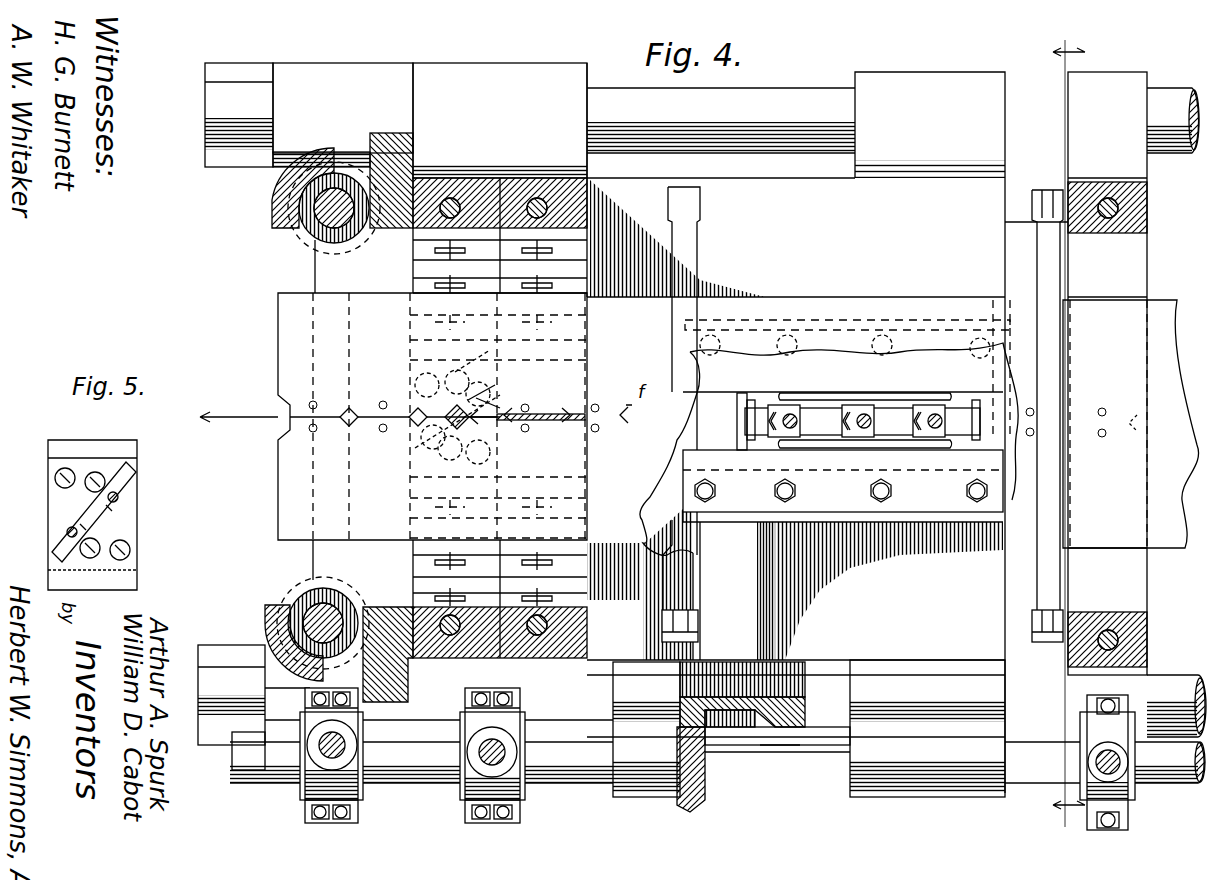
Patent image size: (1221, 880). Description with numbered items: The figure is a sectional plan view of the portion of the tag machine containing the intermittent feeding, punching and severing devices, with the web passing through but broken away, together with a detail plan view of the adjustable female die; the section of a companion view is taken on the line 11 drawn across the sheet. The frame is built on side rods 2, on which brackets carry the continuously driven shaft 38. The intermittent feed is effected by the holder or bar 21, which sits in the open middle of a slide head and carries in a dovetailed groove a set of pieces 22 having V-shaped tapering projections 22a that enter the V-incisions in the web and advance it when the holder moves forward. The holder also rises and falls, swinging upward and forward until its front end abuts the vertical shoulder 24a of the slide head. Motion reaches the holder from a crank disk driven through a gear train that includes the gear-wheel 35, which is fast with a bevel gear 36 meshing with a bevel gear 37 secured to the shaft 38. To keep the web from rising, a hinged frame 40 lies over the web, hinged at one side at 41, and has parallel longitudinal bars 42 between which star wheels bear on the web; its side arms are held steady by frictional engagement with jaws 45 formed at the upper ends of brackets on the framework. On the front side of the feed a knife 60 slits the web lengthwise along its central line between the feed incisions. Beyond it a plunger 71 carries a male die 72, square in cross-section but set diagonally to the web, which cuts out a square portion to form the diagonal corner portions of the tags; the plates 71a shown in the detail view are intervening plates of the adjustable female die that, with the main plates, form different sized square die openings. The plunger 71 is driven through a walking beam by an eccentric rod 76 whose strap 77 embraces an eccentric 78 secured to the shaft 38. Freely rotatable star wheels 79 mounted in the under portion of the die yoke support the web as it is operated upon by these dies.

In FIG. 4, the side rods 2 is at (793, 95).
In FIG. 4, the section line 11— 11 is at (1066, 428).
In FIG. 4, the holder or bar 21 is at (965, 445).
In FIG. 4, the pieces 22 is at (860, 432).
In FIG. 4, the V-shaped tapering projections 22a is at (843, 412).
In FIG. 4, the vertical shoulder 24a is at (742, 445).
In FIG. 4, the gear-wheel 35 is at (770, 683).
In FIG. 4, the bevel gear 36 is at (742, 715).
In FIG. 4, the bevel gear 37 is at (700, 800).
In FIG. 4, the shaft 38 is at (808, 752).
In FIG. 4, the hinged frame 40 is at (1040, 370).
In FIG. 4, the hinge 41 is at (1050, 628).
In FIG. 4, the parallel longitudinal bars 42 is at (988, 340).
In FIG. 4, the jaws 45 is at (698, 212).
In FIG. 4, the knife 60 is at (585, 414).
In FIG. 4, the plunger 71 is at (425, 376).
In FIG. 5, the plunger 71 is at (125, 512).
In FIG. 4, the bar 71a is at (493, 390).
In FIG. 5, the bar 71a is at (135, 478).
In FIG. 4, the male die 72 is at (485, 415).
In FIG. 4, the eccentric rod 76 is at (505, 770).
In FIG. 4, the strap 77 is at (505, 720).
In FIG. 4, the eccentric 78 is at (545, 758).
In FIG. 4, the star wheels 79 is at (462, 240).